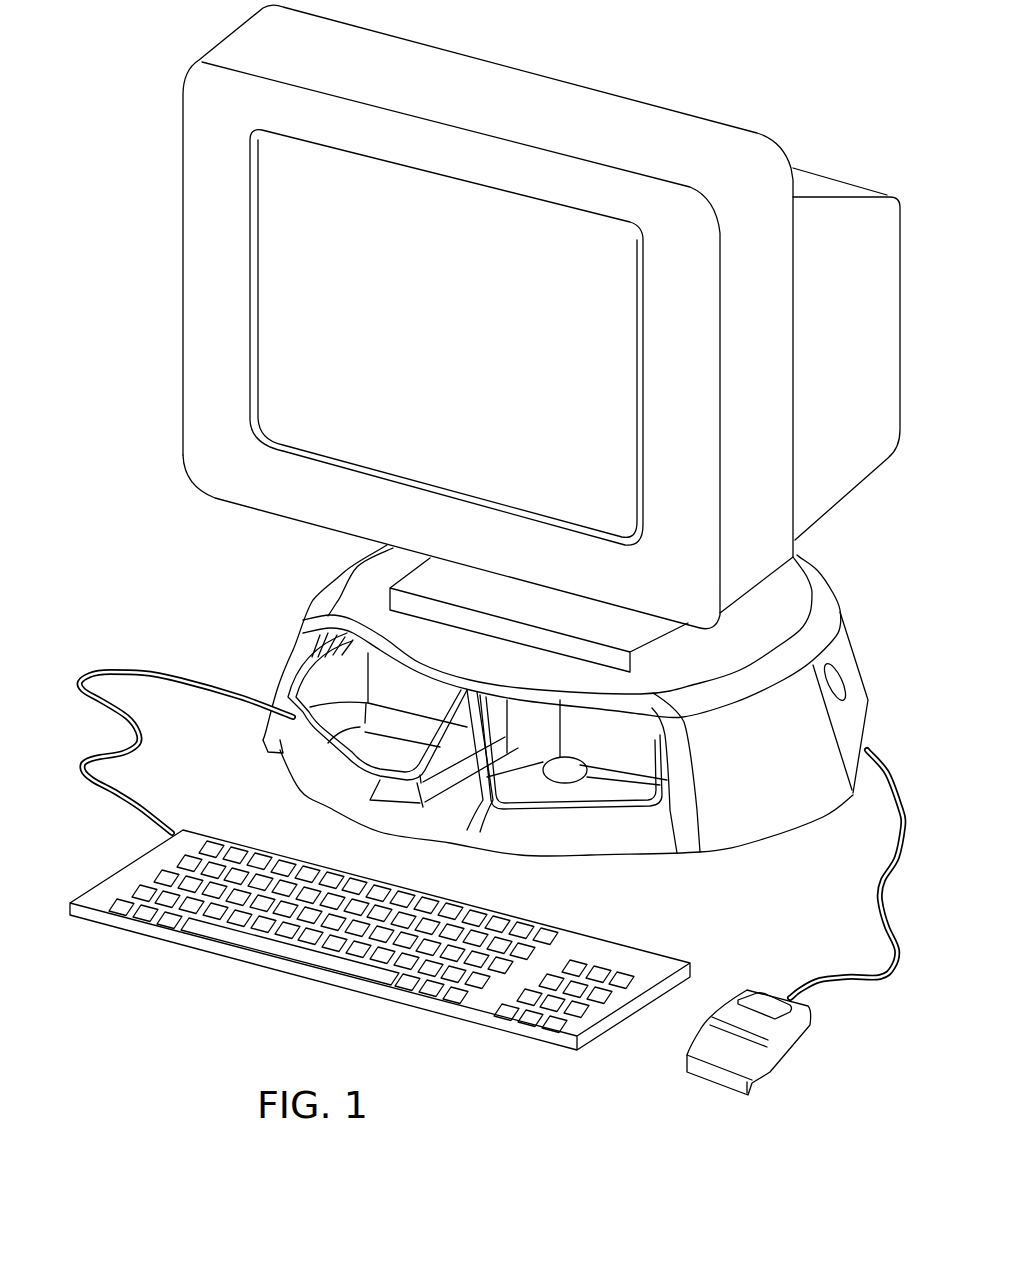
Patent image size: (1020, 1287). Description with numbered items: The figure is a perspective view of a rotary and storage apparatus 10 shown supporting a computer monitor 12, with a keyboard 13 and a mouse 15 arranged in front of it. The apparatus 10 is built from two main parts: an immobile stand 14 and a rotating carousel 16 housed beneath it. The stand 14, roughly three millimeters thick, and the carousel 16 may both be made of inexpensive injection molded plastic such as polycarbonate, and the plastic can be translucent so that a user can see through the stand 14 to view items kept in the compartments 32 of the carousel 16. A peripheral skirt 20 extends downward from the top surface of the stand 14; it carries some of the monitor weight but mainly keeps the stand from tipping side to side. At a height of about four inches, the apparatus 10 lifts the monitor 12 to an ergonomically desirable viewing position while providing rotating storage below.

The rotary and storage apparatus 10 is at (846, 572).
The computer monitor 12 is at (622, 110).
The keyboard 13 is at (600, 1037).
The immobile stand 14 is at (292, 601).
The mouse 15 is at (785, 1058).
The rotating carousel 16 is at (443, 812).
The peripheral skirt 20 is at (750, 823).
The compartments 32 is at (347, 743).